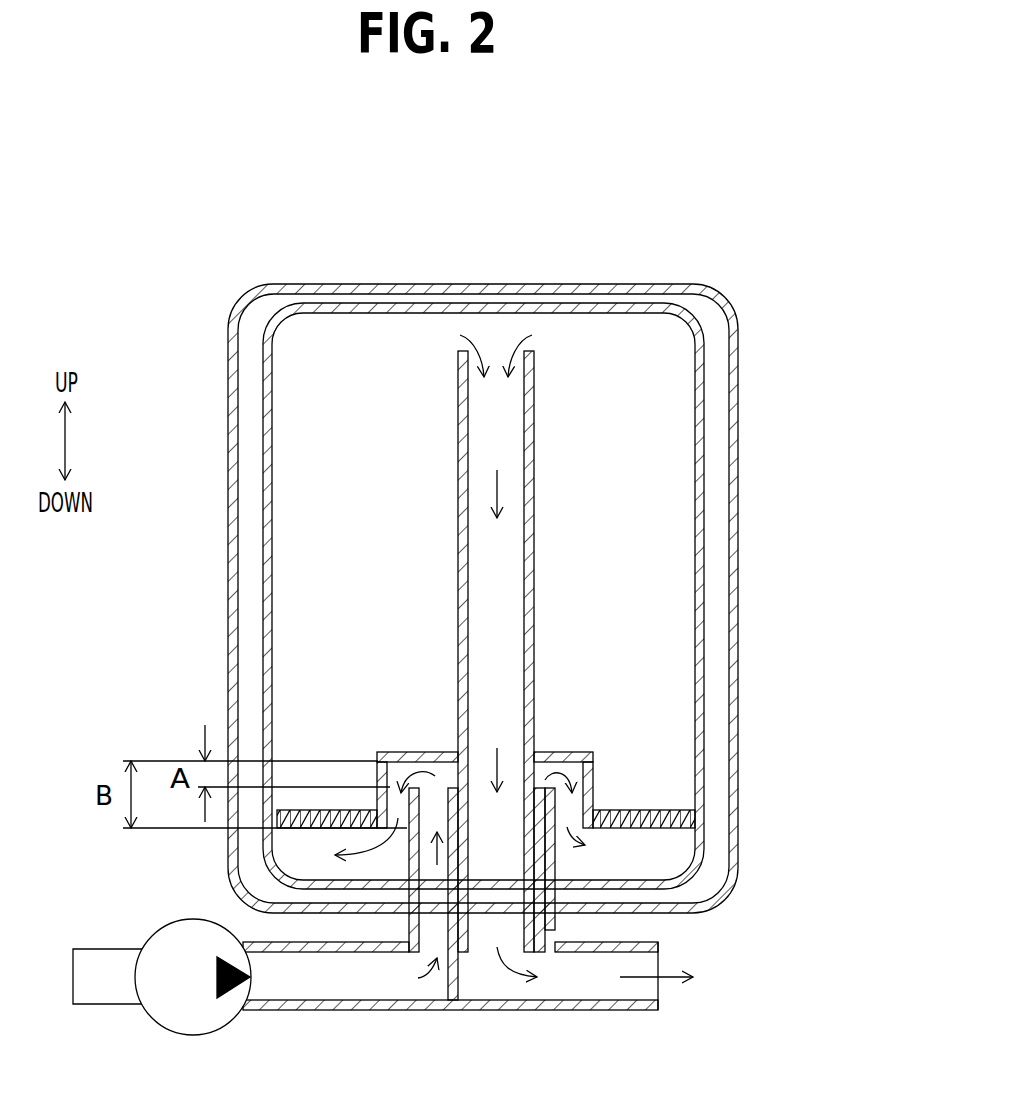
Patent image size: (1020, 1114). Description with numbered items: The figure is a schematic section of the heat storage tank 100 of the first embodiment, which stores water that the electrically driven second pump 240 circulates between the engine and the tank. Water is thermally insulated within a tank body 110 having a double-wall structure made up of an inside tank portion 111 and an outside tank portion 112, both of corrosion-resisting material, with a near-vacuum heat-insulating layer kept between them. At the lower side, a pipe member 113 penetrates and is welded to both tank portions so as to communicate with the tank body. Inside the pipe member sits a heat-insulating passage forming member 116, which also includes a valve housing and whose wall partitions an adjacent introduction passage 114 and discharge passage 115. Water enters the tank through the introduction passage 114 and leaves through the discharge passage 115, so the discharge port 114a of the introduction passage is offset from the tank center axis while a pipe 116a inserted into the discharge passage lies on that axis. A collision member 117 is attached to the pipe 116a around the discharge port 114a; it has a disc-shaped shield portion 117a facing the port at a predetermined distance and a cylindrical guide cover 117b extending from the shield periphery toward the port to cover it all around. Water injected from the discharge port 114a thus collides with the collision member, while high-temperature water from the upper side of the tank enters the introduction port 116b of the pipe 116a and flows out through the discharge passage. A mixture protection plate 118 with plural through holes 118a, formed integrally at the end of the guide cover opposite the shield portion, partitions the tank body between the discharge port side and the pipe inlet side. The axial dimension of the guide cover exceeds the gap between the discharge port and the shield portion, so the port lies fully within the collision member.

The heat storage tank 100 is at (565, 268).
The tank body 110 is at (613, 515).
The inside tank portion 111 is at (705, 360).
The outside tank portion 112 is at (737, 404).
The pipe member 113 is at (552, 853).
The introduction passage 114 is at (405, 935).
The discharge port 114a is at (433, 788).
The discharge passage 115 is at (505, 900).
The passage forming member 116 is at (525, 1012).
The pipe 116a is at (533, 456).
The introduction port 116b is at (497, 348).
The collision member 117 is at (572, 750).
The shield portion 117a is at (445, 752).
The guide cover 117b is at (595, 775).
The mixture protection plate 118 is at (318, 830).
The through holes 118a is at (663, 810).
The second pump 240 is at (157, 1024).